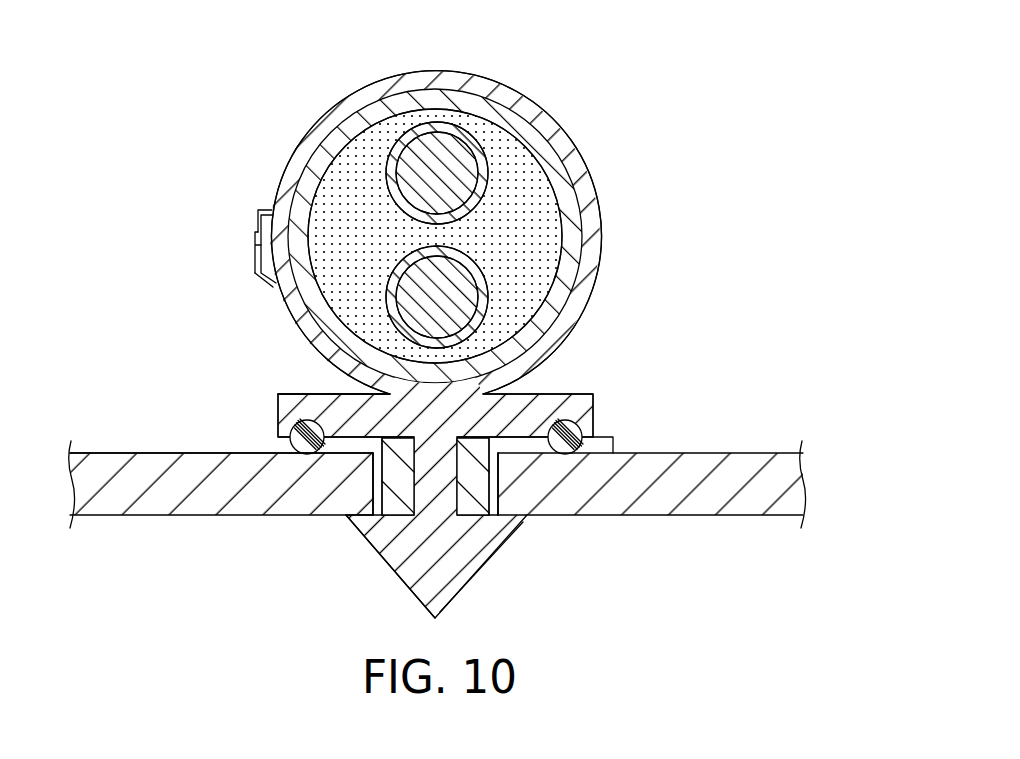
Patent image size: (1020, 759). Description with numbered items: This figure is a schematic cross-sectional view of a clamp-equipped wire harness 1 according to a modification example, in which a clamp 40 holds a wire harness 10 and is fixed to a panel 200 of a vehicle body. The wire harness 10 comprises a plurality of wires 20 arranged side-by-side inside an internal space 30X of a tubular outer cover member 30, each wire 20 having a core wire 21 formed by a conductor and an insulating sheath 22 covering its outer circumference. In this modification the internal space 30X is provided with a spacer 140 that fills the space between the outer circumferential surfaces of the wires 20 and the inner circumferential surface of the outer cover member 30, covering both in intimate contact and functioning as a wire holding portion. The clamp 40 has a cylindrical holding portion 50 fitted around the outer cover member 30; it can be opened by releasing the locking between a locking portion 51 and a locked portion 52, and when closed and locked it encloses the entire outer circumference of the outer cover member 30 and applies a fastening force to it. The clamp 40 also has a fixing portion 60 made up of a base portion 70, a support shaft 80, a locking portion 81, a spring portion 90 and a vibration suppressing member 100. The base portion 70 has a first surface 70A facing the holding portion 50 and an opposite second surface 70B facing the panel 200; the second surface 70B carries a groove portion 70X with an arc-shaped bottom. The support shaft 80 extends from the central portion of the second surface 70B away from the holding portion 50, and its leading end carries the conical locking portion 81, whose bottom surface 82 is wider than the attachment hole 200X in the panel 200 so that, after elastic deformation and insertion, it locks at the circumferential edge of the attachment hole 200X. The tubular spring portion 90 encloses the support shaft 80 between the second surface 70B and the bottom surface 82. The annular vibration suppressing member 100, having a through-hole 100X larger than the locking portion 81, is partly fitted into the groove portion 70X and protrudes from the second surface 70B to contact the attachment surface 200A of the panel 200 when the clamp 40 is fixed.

The clamp-equipped wire harness 1 is at (657, 67).
The wire harness 10 is at (547, 137).
The wires 20 is at (487, 290).
The core wire 21 is at (465, 166).
The insulating sheath 22 is at (483, 184).
The outer cover member 30 is at (357, 120).
The internal space 30X is at (345, 160).
The clamp 40 is at (575, 140).
The holding portion 50 is at (290, 177).
The locking portion 51 is at (258, 215).
The locked portion 52 is at (255, 250).
The fixing portion 60 is at (635, 367).
The base portion 70 is at (285, 414).
The first surface 70A is at (291, 393).
The second surface 70B is at (288, 445).
The groove portion 70X is at (583, 425).
The support shaft 80 is at (401, 562).
The locking portion 81 is at (453, 573).
The bottom surface 82 is at (343, 512).
The spring portion 90 is at (398, 514).
The vibration suppressing member 100 is at (588, 445).
The through-hole 100X is at (298, 492).
The spacer 140 is at (530, 240).
The panel 200 is at (742, 455).
The attachment surface 200A is at (115, 453).
The attachment hole 200X is at (493, 517).